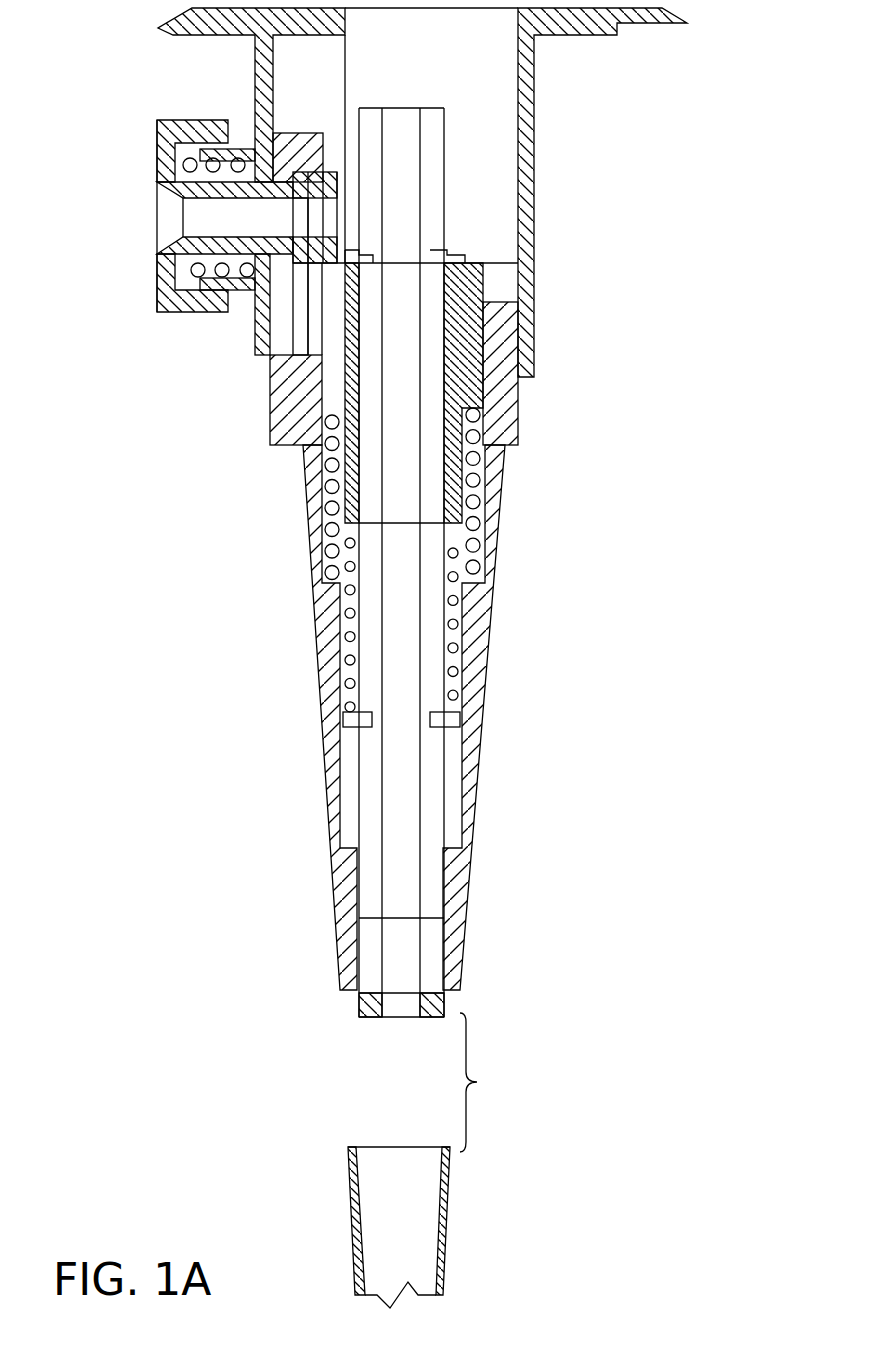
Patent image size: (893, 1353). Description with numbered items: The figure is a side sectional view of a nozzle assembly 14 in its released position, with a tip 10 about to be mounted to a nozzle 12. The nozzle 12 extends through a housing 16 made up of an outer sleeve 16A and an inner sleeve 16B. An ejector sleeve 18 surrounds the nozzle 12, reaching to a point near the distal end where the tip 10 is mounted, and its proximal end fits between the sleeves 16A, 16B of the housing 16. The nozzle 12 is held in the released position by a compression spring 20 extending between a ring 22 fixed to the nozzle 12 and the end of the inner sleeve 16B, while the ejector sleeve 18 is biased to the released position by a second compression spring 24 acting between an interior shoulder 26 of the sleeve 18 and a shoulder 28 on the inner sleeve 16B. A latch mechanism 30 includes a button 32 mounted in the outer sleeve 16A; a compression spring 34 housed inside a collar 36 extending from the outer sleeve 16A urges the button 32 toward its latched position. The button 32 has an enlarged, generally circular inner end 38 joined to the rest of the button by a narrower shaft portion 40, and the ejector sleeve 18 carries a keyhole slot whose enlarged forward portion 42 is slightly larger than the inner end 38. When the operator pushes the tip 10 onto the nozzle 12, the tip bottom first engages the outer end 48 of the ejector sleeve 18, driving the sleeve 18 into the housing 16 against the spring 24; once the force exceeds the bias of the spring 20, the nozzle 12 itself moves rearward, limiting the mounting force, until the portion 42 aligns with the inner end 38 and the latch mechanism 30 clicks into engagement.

The tip 10 is at (348, 1172).
The nozzle 12 is at (362, 1007).
The nozzle assembly 14 is at (371, 620).
The housing 16 is at (422, 226).
The outer sleeve 16A is at (534, 310).
The inner sleeve 16B is at (290, 415).
The ejector sleeve 18 is at (480, 623).
The compression spring 20 is at (347, 633).
The ring 22 is at (347, 720).
The compression spring 24 is at (323, 507).
The interior shoulder 26 is at (480, 565).
The shoulder 28 is at (480, 420).
The latch mechanism 30 is at (191, 219).
The button 32 is at (155, 153).
The compression spring 34 is at (183, 293).
The collar 36 is at (242, 293).
The inner end 38 is at (332, 172).
The shaft portion 40 is at (255, 122).
The enlarged forward portion 42 is at (300, 323).
The outer end 48 is at (453, 993).